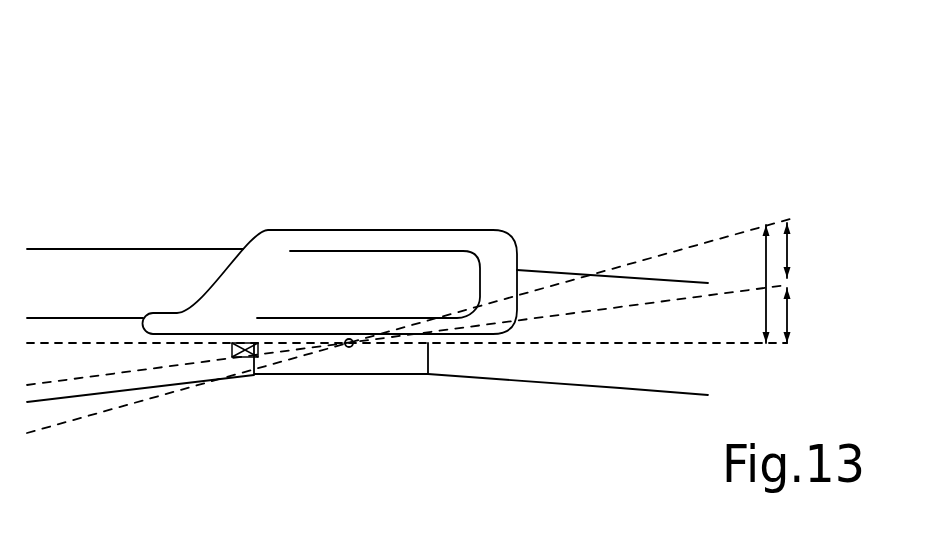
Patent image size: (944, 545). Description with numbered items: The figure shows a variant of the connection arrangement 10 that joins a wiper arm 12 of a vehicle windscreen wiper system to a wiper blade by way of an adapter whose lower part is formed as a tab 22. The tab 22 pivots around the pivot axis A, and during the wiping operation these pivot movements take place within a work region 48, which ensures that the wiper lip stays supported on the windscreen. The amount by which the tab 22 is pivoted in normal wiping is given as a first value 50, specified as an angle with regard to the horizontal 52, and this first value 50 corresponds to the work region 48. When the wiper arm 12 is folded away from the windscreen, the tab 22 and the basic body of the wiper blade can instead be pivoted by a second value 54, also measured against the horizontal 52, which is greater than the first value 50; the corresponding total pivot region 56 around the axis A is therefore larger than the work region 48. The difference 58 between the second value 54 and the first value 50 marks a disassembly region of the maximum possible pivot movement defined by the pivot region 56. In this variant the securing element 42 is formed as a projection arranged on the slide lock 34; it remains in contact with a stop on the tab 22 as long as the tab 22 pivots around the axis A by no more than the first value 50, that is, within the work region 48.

The connection arrangement 10 is at (100, 79).
The wiper arm 12 is at (166, 263).
The tab 22 is at (370, 357).
The slide lock 34 is at (445, 285).
The securing element 42 is at (247, 358).
The work region 48 is at (608, 323).
The first value 50 is at (790, 312).
The horizontal 52 is at (517, 343).
The second value 54 is at (765, 307).
The total pivot region 56 is at (687, 283).
The difference 58 is at (790, 258).
The pivot axis A is at (349, 339).